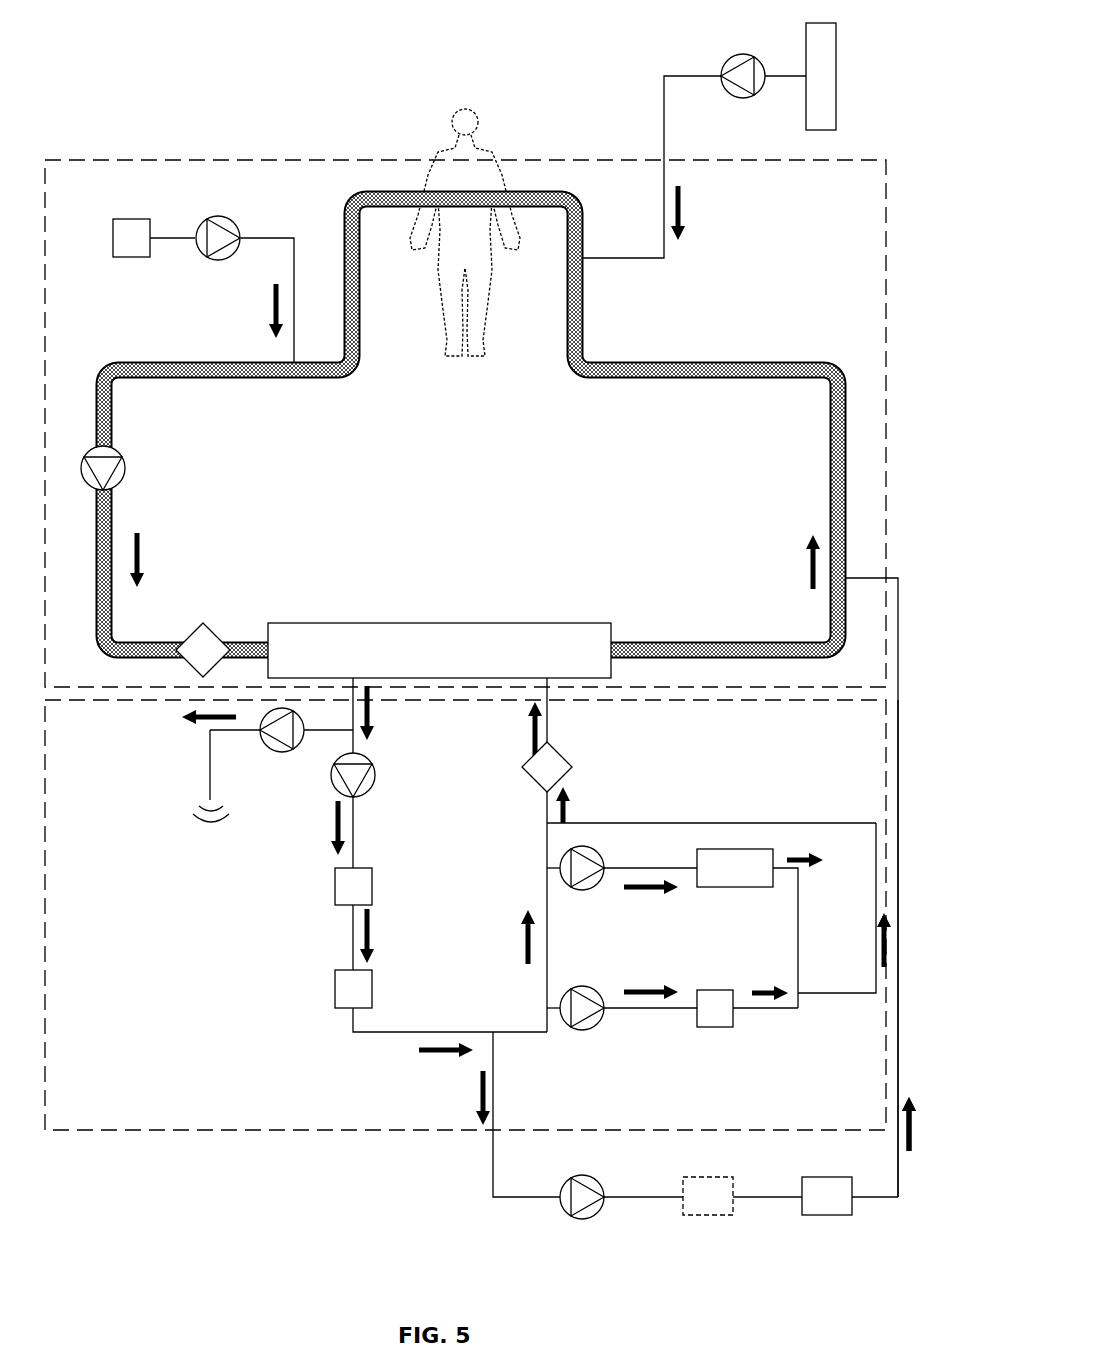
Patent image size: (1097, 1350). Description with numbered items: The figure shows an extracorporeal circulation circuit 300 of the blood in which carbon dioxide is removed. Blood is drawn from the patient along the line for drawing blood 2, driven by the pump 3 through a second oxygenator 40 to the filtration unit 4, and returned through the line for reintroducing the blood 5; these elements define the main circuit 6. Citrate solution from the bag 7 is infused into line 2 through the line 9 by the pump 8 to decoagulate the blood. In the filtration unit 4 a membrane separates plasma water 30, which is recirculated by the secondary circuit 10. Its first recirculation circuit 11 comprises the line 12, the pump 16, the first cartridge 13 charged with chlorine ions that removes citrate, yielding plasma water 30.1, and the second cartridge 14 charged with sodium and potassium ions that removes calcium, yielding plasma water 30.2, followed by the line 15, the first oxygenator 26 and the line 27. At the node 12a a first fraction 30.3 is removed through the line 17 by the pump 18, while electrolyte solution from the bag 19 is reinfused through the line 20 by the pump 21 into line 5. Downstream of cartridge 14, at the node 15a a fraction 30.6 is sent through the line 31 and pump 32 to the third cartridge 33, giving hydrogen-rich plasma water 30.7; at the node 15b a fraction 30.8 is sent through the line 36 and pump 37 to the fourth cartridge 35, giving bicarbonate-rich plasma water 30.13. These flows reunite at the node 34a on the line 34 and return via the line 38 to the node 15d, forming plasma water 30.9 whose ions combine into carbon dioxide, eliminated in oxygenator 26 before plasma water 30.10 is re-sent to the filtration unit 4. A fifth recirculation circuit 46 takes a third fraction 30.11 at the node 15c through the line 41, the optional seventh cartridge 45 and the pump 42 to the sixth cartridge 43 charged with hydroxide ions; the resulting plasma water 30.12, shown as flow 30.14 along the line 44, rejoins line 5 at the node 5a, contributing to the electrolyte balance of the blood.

The line for drawing blood 2 is at (208, 362).
The pump 3 is at (126, 466).
The filtration unit 4 is at (439, 650).
The line for reintroducing the blood 5 is at (829, 460).
The node 5a is at (848, 578).
The main circuit 6 is at (88, 158).
The bag 7 is at (133, 219).
The pump 8 is at (215, 216).
The line 9 is at (280, 230).
The secondary circuit 10 is at (822, 1130).
The first recirculation circuit 11 is at (375, 1032).
The line 12 is at (356, 838).
The node 12a is at (365, 740).
The first cartridge 13 is at (335, 890).
The second cartridge 14 is at (335, 1000).
The line 15 is at (520, 1032).
The node 15a is at (547, 1008).
The node 15b is at (547, 868).
The node 15c is at (493, 1032).
The node 15d is at (547, 823).
The pump 16 is at (375, 770).
The line 17 is at (208, 780).
The pump 18 is at (278, 750).
The bag 19 is at (826, 85).
The line 20 is at (664, 105).
The pump 21 is at (724, 62).
The first oxygenator 26 is at (568, 760).
The line 27 is at (550, 728).
The plasma water 30 is at (384, 713).
The plasma water 30.1 is at (403, 936).
The plasma water 30.2 is at (455, 1064).
The first fraction of plasma water 30.3 is at (190, 729).
The first fraction of plasma water 30.6 is at (651, 980).
The plasma water 30.7 is at (764, 983).
The second fraction of plasma water 30.8 is at (651, 900).
The plasma water 30.9 is at (591, 805).
The plasma water 30.10 is at (506, 729).
The third fraction of plasma water 30.11 is at (455, 1098).
The plasma water 30.12 is at (934, 1134).
The plasma water 30.13 is at (808, 844).
The flow direction 30.14 is at (918, 940).
The line 31 is at (645, 1008).
The pump 32 is at (585, 987).
The third cartridge 33 is at (716, 1028).
The line 34 is at (798, 896).
The node 34a is at (798, 1002).
The fourth cartridge 35 is at (738, 888).
The line 36 is at (665, 868).
The pump 37 is at (594, 888).
The line 38 is at (845, 823).
The second oxygenator 40 is at (212, 625).
The line 41 is at (493, 1170).
The pump 42 is at (600, 1212).
The sixth cartridge 43 is at (845, 1215).
The line 44 is at (898, 1052).
The seventh cartridge 45 is at (735, 1215).
The fifth recirculation circuit 46 is at (898, 916).
The extracorporeal circulation circuit 300 is at (92, 1184).